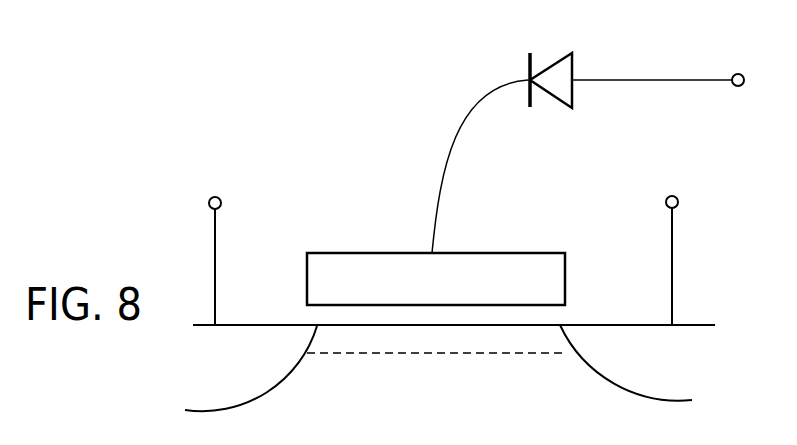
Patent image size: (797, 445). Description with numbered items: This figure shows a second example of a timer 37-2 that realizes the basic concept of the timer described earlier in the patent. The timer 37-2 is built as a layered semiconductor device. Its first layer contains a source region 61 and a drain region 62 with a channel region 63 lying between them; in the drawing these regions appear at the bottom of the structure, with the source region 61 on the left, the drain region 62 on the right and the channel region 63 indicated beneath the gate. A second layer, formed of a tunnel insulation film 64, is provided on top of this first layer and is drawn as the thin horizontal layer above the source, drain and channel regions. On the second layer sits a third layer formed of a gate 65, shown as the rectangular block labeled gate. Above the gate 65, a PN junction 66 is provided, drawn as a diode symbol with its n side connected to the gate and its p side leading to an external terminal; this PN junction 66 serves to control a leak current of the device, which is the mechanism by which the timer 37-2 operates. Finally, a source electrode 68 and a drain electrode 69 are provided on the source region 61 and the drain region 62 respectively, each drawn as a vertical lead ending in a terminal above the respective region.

The timer 37-2 is at (363, 99).
The source region 61 is at (270, 388).
The drain region 62 is at (613, 385).
The channel region 63 is at (427, 356).
The tunnel insulation film 64 is at (568, 312).
The gate 65 is at (563, 252).
The PN junction 66 is at (553, 108).
The source electrode 68 is at (208, 207).
The drain electrode 69 is at (680, 203).